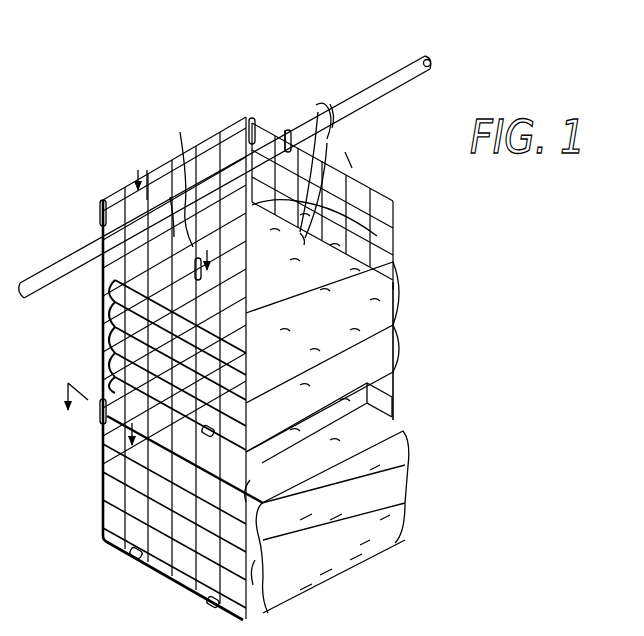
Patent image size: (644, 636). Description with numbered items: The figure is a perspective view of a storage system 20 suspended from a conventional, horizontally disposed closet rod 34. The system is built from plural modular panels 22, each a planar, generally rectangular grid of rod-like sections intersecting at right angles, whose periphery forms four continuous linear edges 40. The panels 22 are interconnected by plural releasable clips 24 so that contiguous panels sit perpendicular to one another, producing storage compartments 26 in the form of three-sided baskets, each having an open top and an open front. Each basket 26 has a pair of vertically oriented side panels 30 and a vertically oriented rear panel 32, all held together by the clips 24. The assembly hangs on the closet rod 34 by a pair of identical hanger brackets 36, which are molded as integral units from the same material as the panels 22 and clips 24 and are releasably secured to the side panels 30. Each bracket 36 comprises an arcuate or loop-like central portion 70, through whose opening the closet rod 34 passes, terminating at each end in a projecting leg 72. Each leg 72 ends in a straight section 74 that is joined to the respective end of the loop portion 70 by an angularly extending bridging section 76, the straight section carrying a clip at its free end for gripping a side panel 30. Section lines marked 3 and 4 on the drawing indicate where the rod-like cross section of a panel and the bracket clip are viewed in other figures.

The storage system 20 is at (430, 348).
The modular panel 22 is at (208, 132).
The clip 24 is at (252, 118).
The storage compartment 26 is at (396, 283).
The side panel 30 is at (393, 230).
The rear panel 32 is at (147, 175).
The closet rod 34 is at (412, 58).
The hanger bracket 36 is at (346, 152).
The linear edge 40 is at (395, 255).
The loop-like central portion 70 is at (183, 165).
The projecting leg 72 is at (333, 100).
The straight section 74 is at (284, 145).
The bridging section 76 is at (247, 238).
The section line 3- 3 is at (100, 435).
The section line 4- 4 is at (174, 209).